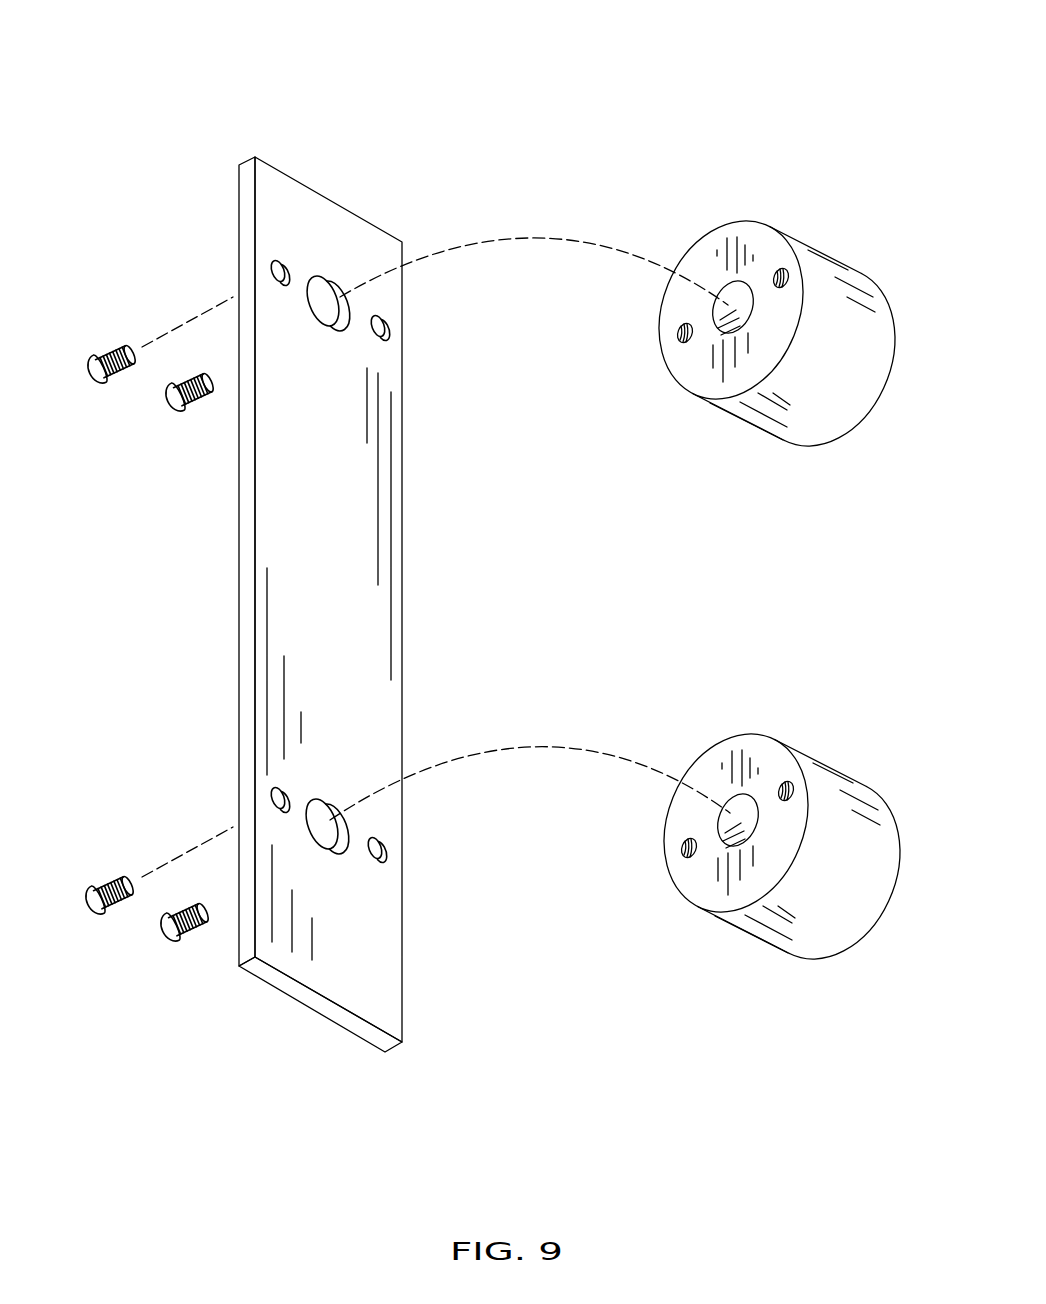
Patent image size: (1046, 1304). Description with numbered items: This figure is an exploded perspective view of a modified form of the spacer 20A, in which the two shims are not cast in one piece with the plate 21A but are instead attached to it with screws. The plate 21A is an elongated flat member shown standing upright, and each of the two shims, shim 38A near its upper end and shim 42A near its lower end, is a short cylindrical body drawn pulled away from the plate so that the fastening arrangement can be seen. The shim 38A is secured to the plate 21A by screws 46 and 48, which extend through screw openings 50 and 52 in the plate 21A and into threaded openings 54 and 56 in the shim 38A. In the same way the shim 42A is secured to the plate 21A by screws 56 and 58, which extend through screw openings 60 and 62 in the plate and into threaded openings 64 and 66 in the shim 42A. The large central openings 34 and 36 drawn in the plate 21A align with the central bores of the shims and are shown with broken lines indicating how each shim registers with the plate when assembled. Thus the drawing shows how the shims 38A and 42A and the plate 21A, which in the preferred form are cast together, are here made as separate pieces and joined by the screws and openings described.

The spacer 20A is at (360, 182).
The plate 21A is at (370, 552).
The upper large aperture 34 is at (340, 296).
The lower large aperture 36 is at (328, 800).
The shim 38A is at (880, 278).
The shim 42A is at (882, 790).
The screw 46 is at (109, 352).
The screw 48 is at (168, 404).
The screw opening 50 is at (280, 262).
The screw opening 52 is at (390, 334).
The threaded opening 54 is at (777, 270).
The threaded opening 56 is at (680, 340).
The screw 58 is at (181, 944).
The screw opening 60 is at (277, 792).
The screw opening 62 is at (388, 852).
The threaded opening 64 is at (781, 783).
The threaded opening 66 is at (683, 855).